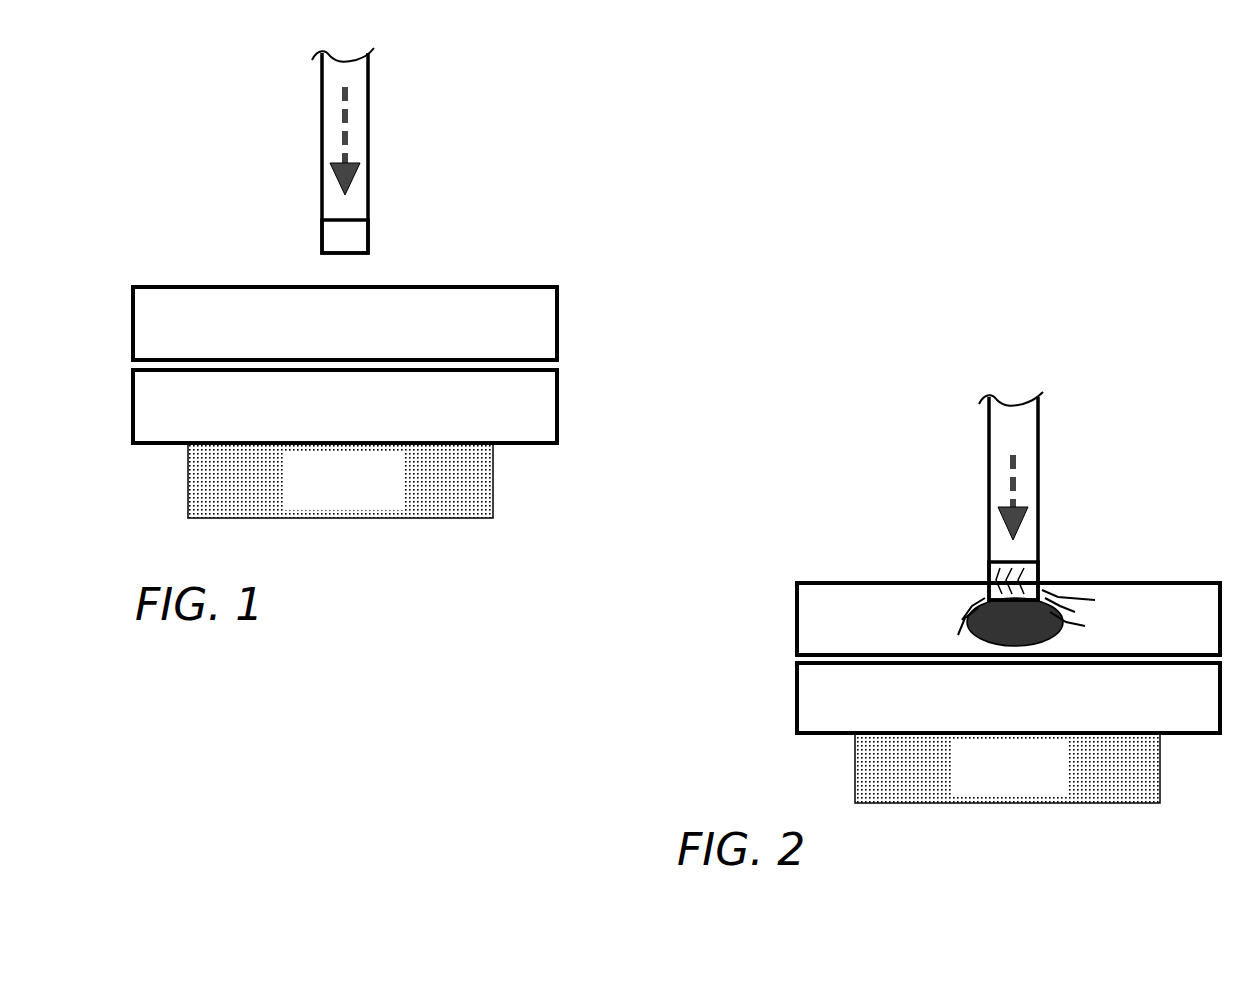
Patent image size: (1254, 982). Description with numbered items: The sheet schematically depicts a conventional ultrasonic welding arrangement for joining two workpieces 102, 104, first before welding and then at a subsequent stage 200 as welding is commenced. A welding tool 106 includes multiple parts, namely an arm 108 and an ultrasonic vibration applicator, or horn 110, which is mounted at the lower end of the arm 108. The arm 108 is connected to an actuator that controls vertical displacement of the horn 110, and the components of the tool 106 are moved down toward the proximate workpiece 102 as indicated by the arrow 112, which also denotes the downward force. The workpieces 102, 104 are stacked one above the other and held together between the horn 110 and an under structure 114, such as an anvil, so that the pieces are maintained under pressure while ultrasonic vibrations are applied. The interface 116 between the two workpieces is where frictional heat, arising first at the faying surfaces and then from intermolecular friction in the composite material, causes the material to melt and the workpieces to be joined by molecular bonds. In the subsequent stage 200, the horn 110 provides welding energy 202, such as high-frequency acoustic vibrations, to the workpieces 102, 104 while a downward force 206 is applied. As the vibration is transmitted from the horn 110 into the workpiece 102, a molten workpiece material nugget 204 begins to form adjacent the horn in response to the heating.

In FIG. 1, the proximate workpiece 102 is at (453, 348).
In FIG. 2, the proximate workpiece 102 is at (1197, 642).
In FIG. 1, the workpiece 104 is at (465, 423).
In FIG. 2, the workpiece 104 is at (1140, 717).
In FIG. 1, the welding tool 106 is at (422, 77).
In FIG. 1, the arm 108 is at (322, 103).
In FIG. 2, the arm 108 is at (989, 440).
In FIG. 1, the horn 110 is at (368, 232).
In FIG. 2, the horn 110 is at (1040, 583).
In FIG. 1, the arrow 112 is at (322, 128).
In FIG. 1, the under structure 114 is at (373, 500).
In FIG. 2, the under structure 114 is at (1040, 788).
In FIG. 1, the interface 116 is at (325, 400).
In FIG. 2, the interface 116 is at (793, 657).
In FIG. 2, the subsequent stage 200 is at (1138, 410).
In FIG. 2, the welding energy 202 is at (930, 606).
In FIG. 2, the molten workpiece material nugget 204 is at (985, 640).
In FIG. 2, the downward force 206 is at (989, 468).